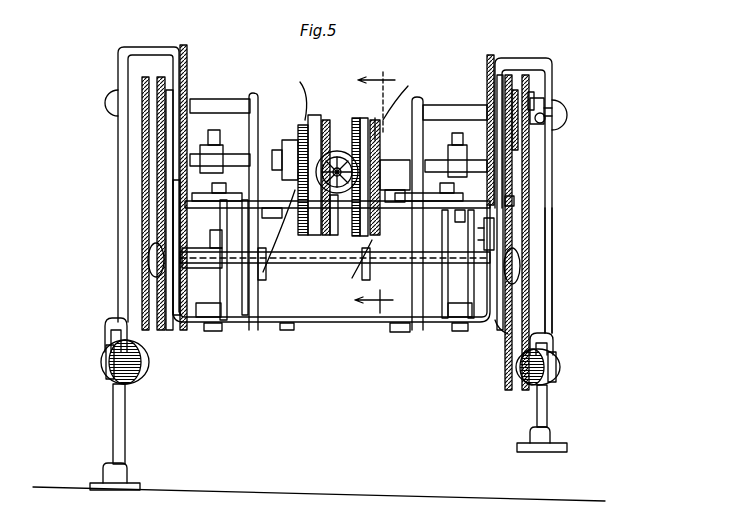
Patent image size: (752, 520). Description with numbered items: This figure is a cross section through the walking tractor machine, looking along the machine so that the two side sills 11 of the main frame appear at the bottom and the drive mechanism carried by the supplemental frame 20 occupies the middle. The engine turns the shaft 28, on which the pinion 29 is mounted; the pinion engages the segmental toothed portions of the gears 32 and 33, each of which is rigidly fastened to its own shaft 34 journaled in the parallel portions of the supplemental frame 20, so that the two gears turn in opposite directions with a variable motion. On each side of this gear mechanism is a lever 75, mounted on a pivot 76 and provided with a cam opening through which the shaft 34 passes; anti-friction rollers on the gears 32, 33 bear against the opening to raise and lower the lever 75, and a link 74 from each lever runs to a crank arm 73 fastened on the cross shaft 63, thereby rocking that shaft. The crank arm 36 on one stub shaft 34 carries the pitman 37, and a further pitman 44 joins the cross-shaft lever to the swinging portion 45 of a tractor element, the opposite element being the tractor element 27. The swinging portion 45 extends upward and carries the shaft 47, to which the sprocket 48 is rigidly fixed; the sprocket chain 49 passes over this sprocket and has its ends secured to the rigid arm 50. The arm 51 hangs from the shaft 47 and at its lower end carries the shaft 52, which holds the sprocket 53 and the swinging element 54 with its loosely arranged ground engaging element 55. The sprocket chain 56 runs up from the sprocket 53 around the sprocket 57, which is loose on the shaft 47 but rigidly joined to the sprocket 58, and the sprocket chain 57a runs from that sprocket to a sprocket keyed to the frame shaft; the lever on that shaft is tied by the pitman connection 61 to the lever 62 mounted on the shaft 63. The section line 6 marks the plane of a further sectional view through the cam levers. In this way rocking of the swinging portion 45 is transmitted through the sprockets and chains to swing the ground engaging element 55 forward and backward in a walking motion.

The section line 6— 6 is at (375, 188).
The side sill 11 is at (215, 200).
The supplemental frame 20 is at (331, 251).
The tractor element 27 is at (128, 50).
The shaft 28 is at (322, 210).
The pinion 29 is at (336, 152).
The gear 32 is at (315, 115).
The gear 33 is at (376, 120).
The shaft 34 is at (290, 165).
The crank arm 36 is at (270, 150).
The pitman 37 is at (213, 194).
The pitman 44 is at (232, 137).
The swinging portion 45 is at (185, 306).
The shaft 47 is at (546, 118).
The sprocket 48 is at (487, 66).
The sprocket chain 49 is at (495, 62).
The rigid arm 50 is at (494, 236).
The arm 51 is at (548, 308).
The shaft 52 is at (150, 362).
The sprocket 53 is at (140, 330).
The swinging element 54 is at (125, 415).
The ground engaging element 55 is at (135, 483).
The sprocket chain 56 is at (516, 330).
The sprocket 57 is at (536, 102).
The sprocket chain 57a is at (514, 204).
The sprocket 58 is at (515, 90).
The pitman connection 61 is at (208, 250).
The lever 62 is at (224, 250).
The shaft 63 is at (330, 265).
The crank arm 73 is at (282, 280).
The link 74 is at (313, 242).
The lever 75 is at (354, 94).
The pivot 76 is at (254, 262).